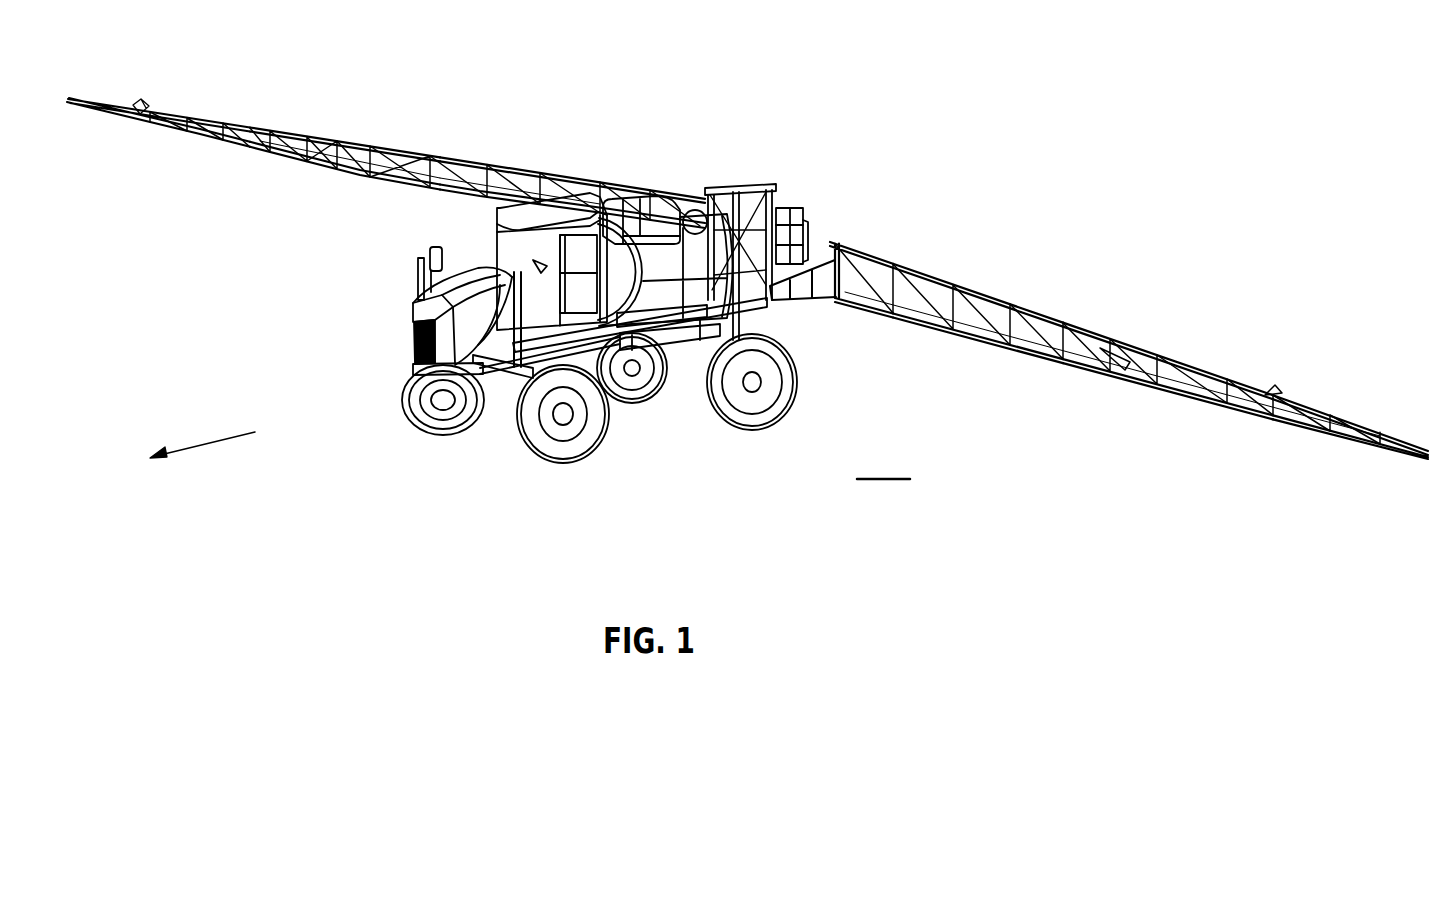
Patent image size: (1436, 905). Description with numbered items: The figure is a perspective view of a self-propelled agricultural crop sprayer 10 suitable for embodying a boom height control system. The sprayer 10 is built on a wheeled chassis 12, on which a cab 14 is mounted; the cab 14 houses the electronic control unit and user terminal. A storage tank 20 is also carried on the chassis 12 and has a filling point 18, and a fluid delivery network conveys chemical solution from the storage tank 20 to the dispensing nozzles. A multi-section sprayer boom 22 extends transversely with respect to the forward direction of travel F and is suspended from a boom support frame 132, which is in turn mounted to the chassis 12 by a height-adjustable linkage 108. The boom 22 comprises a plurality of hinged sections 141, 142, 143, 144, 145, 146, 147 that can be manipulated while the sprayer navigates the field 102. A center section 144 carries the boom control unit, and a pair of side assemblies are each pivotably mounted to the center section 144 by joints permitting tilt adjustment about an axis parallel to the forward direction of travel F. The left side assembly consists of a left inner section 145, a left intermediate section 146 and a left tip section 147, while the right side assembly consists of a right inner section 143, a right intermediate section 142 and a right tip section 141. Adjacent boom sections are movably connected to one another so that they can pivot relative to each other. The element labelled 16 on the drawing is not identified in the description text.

The self-propelled agricultural crop sprayer 10 is at (808, 166).
The wheeled chassis 12 is at (492, 372).
The cab 14 is at (496, 228).
The engine hood 16 is at (410, 336).
The filling point 18 is at (690, 210).
The storage tank 20 is at (630, 193).
The multi-section sprayer boom 22 is at (957, 280).
The field 102 is at (883, 464).
The height-adjustable linkage 108 is at (757, 228).
The boom support frame 132 is at (800, 228).
The right tip section 141 is at (148, 110).
The right intermediate section 142 is at (338, 142).
The right inner section 143 is at (525, 171).
The center section 144 is at (780, 292).
The left inner section 145 is at (974, 290).
The left intermediate section 146 is at (1170, 360).
The left tip section 147 is at (1361, 428).
The forward direction of travel F is at (202, 436).